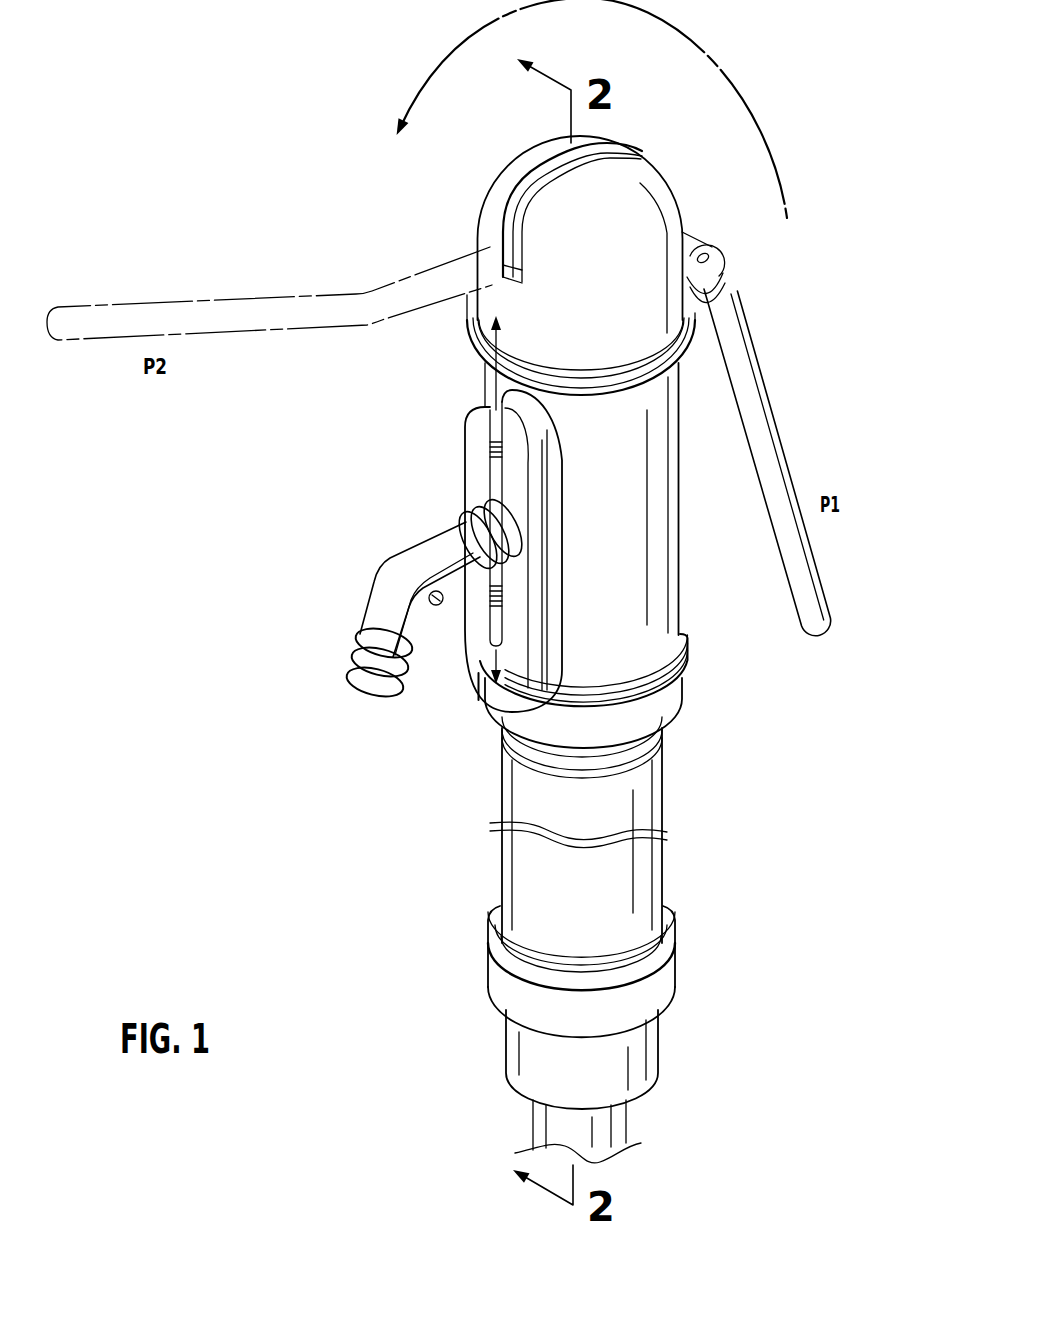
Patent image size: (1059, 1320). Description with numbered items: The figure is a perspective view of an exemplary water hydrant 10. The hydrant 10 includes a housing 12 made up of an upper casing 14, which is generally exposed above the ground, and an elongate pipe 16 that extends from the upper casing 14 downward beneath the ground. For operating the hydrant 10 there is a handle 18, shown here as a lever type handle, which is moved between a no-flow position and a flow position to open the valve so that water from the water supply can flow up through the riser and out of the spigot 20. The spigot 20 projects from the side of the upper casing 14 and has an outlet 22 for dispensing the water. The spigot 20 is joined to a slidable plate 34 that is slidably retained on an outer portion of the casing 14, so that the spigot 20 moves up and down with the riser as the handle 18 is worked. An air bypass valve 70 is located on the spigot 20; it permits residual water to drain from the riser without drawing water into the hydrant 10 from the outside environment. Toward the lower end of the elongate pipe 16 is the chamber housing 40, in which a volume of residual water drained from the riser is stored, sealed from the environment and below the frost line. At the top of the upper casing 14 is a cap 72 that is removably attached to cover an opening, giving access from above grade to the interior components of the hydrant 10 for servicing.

The water hydrant 10 is at (184, 582).
The housing 12 is at (705, 678).
The upper casing 14 is at (681, 571).
The elongate pipe 16 is at (669, 796).
The handle 18 is at (770, 392).
The spigot 20 is at (397, 562).
The outlet 22 is at (348, 678).
The slidable plate 34 is at (463, 444).
The chamber housing 40 is at (507, 1050).
The air bypass valve 70 is at (440, 607).
The cap 72 is at (676, 188).